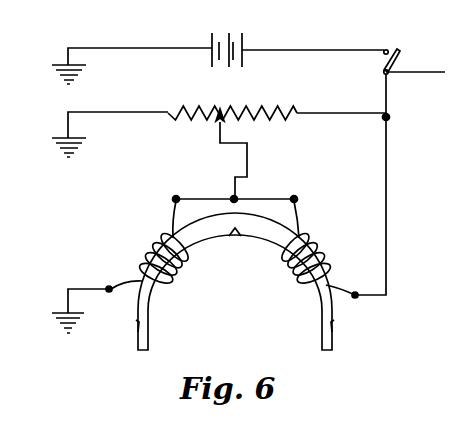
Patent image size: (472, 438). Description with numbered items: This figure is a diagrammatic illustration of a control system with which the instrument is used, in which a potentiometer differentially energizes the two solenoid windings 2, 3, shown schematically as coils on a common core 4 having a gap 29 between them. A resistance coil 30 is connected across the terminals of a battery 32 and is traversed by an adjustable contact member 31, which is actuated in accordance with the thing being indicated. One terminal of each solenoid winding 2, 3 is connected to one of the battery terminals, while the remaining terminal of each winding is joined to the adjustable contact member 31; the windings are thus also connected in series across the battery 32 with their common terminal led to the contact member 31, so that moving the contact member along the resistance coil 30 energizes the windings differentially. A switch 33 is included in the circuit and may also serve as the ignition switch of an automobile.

The solenoid winding 2 is at (151, 254).
The solenoid winding 3 is at (331, 254).
The magnetic core 4 is at (262, 237).
The gap in core 29 is at (233, 236).
The resistance coil 30 is at (254, 109).
The adjustable contact member 31 is at (216, 130).
The battery 32 is at (246, 37).
The switch 33 is at (382, 63).